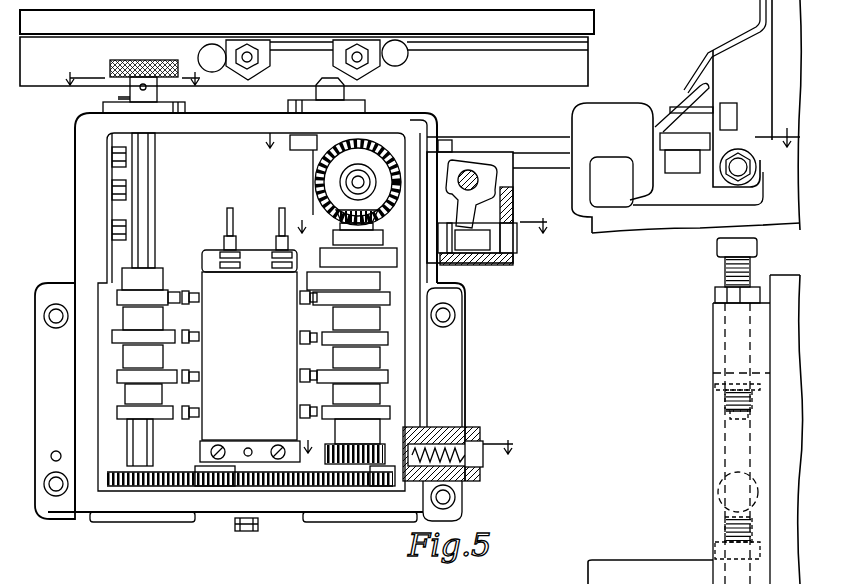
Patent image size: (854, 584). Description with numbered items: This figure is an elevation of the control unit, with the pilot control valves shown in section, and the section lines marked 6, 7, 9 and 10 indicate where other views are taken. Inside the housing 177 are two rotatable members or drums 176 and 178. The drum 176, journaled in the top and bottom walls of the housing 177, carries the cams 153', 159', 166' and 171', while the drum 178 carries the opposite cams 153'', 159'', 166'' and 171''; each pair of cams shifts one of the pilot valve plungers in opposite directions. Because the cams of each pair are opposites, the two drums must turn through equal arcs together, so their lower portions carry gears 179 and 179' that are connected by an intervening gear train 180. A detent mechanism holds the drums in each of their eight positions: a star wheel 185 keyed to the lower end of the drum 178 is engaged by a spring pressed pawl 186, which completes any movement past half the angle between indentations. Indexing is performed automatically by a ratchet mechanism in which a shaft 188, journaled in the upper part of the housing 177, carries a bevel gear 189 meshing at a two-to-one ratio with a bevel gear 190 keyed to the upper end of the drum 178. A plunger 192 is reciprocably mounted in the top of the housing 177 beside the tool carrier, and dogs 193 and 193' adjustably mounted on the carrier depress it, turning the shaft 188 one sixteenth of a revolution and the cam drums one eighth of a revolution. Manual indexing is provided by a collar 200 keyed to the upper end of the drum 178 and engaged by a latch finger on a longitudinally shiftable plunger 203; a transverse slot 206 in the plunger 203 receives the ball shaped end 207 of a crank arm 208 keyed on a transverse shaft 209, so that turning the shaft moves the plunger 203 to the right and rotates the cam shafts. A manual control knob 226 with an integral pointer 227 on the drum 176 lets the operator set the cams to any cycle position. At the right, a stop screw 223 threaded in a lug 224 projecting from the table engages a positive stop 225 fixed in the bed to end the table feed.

The dog 193' is at (250, 47).
The dog 193 is at (373, 47).
The manual control knob 226 is at (115, 63).
The pointer 227 is at (128, 97).
The section line 7- 7 is at (132, 89).
The plunger 192 is at (318, 82).
The housing 177 is at (80, 226).
The section line 6- 6 is at (532, 148).
The rotatable member or drum 176 is at (150, 244).
The cam 153' is at (118, 321).
The cam 159' is at (118, 357).
The cam 166' is at (118, 393).
The cam 171' is at (118, 427).
The cam 153'' is at (382, 317).
The cam 159'' is at (382, 348).
The cam 166'' is at (382, 384).
The cam 171'' is at (382, 415).
The bevel gear 189 is at (318, 172).
The shaft 188 is at (330, 186).
The bevel gear 190 is at (342, 192).
The collar 200 is at (372, 241).
The section line 9- 9 is at (422, 234).
The plunger 203 is at (512, 262).
The transverse slot 206 is at (495, 228).
The ball shaped end 207 is at (495, 270).
The crank arm 208 is at (505, 190).
The shaft 209 is at (474, 170).
The lug 224 is at (718, 338).
The stop screw 223 is at (726, 415).
The positive stop 225 is at (722, 490).
The gear 179 is at (250, 466).
The gear train 180 is at (240, 488).
The gear 179' is at (267, 521).
The star wheel 185 is at (343, 480).
The rotatable member or drum 178 is at (380, 486).
The section line 10- 10 is at (408, 454).
The spring pressed pawl 186 is at (455, 497).